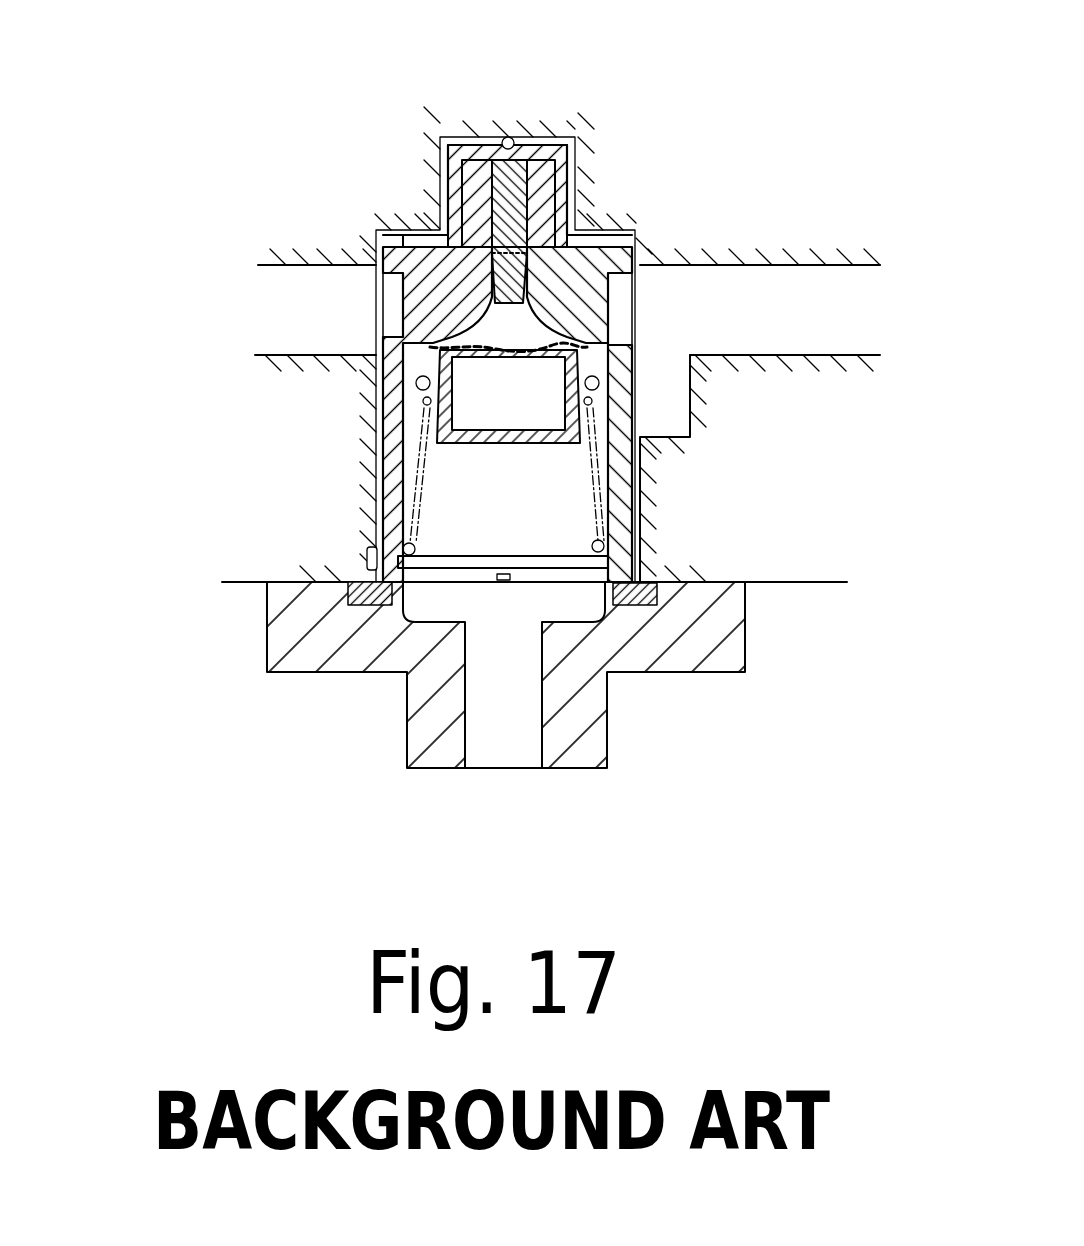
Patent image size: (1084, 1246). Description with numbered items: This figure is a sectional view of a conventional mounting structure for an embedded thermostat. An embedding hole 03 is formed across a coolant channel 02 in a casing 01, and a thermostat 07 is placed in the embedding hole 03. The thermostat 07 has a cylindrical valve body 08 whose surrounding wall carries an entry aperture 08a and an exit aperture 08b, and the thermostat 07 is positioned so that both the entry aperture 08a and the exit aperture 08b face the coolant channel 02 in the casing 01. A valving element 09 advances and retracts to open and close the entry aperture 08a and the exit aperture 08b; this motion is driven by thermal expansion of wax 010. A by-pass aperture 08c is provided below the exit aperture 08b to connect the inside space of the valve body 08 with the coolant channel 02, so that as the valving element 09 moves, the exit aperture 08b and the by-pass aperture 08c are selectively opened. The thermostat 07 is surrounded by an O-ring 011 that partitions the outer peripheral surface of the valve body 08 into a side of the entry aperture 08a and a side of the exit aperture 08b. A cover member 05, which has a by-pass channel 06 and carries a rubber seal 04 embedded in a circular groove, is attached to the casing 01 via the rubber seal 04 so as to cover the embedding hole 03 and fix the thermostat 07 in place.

The casing 01 is at (277, 437).
The coolant channel 02 is at (296, 287).
The embedding hole 03 is at (645, 498).
The rubber seal 04 is at (368, 604).
The cover member 05 is at (384, 764).
The by-pass channel 06 is at (505, 740).
The thermostat 07 is at (660, 283).
The valve body 08 is at (385, 445).
The entry aperture 08a is at (380, 303).
The exit aperture 08b is at (632, 315).
The by-pass aperture 08c is at (639, 384).
The valving element 09 is at (428, 228).
The wax 010 is at (500, 407).
The O-ring 011 is at (512, 136).